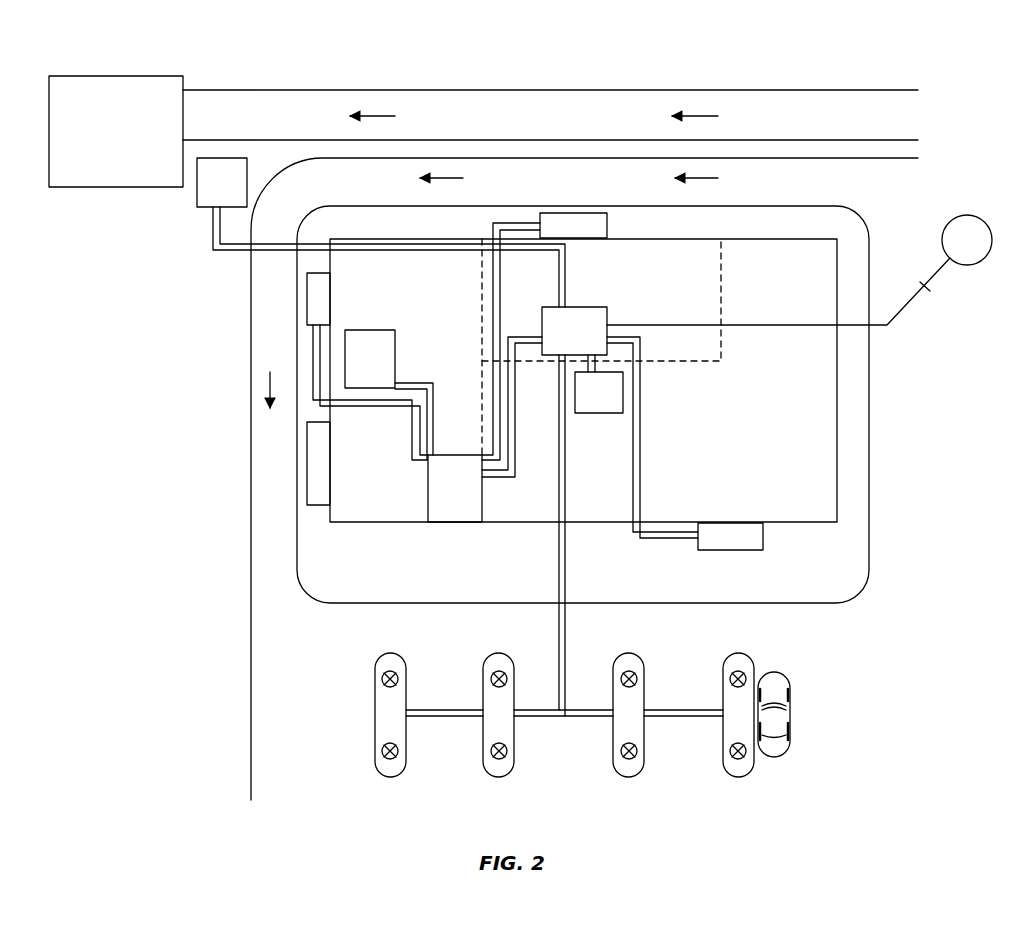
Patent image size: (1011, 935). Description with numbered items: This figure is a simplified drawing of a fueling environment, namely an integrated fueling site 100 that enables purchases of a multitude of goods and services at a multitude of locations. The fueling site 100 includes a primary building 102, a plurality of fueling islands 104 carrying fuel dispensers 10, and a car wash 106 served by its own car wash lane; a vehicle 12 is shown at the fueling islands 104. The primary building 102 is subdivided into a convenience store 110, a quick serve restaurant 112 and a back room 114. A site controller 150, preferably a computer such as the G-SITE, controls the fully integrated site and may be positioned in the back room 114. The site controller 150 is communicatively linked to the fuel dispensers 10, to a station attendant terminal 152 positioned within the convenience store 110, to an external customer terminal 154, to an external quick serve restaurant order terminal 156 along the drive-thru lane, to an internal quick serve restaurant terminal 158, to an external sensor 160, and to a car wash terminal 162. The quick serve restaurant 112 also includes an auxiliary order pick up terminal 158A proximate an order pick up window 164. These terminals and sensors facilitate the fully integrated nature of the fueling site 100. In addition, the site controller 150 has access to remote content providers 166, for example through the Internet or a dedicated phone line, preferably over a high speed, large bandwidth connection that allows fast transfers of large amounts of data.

The fuel dispenser 10 is at (385, 671).
The vehicle 12 is at (780, 758).
The fueling site 100 is at (910, 65).
The primary building 102 is at (898, 407).
The fueling island 104 is at (390, 777).
The car wash 106 is at (100, 158).
The convenience store 110 is at (778, 374).
The quick serve restaurant 112 is at (411, 274).
The back room 114 is at (699, 273).
The site controller 150 is at (590, 342).
The station attendant terminal 152 is at (615, 401).
The external customer terminal 154 is at (746, 548).
The external quick serve restaurant order terminal 156 is at (590, 237).
The internal quick serve restaurant terminal 158 is at (386, 363).
The auxiliary order pick up terminal 158A is at (433, 494).
The external sensor 160 is at (318, 305).
The car wash terminal 162 is at (211, 208).
The order pick up window 164 is at (318, 487).
The remote content providers 166 is at (983, 251).